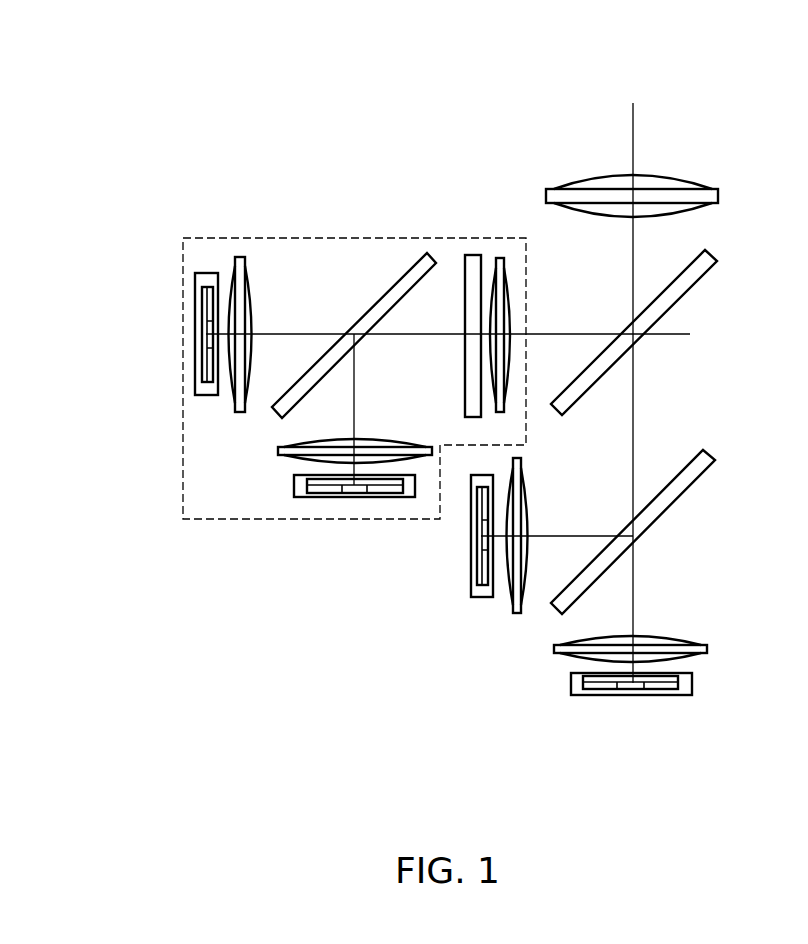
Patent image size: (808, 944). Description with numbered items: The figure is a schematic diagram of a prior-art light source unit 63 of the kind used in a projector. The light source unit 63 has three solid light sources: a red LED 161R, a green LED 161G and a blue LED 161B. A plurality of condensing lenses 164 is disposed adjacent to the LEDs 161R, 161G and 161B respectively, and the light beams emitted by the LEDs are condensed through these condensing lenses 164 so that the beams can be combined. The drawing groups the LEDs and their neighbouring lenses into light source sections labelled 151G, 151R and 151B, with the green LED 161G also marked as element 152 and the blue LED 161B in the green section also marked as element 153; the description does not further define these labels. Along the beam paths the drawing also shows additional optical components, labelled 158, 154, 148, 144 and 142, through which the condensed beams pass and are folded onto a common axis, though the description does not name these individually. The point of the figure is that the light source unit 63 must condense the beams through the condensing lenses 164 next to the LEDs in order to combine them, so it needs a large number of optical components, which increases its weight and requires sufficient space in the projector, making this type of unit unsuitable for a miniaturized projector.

The light source unit 63 is at (215, 118).
The green light source unit 151G is at (297, 234).
The red light source unit 151R is at (498, 598).
The blue light source unit 151B is at (603, 717).
The green LED 161G is at (157, 334).
The red LED 161R is at (482, 542).
The blue LED 161B is at (492, 619).
The first light source 152 is at (203, 332).
The second light source 153 is at (348, 488).
The condensing lens 164 is at (237, 268).
The dichroic mirror 158 is at (395, 293).
The wave plate 154 is at (477, 263).
The condenser lens 148 is at (718, 196).
The dichroic mirror 144 is at (677, 292).
The reflecting mirror 142 is at (678, 486).